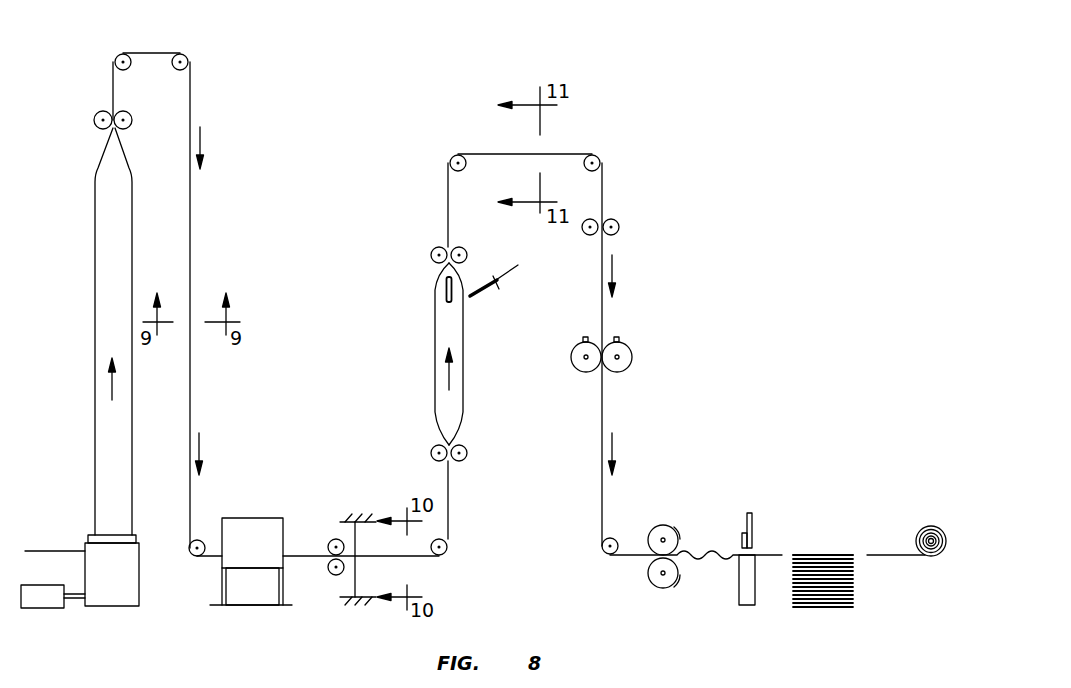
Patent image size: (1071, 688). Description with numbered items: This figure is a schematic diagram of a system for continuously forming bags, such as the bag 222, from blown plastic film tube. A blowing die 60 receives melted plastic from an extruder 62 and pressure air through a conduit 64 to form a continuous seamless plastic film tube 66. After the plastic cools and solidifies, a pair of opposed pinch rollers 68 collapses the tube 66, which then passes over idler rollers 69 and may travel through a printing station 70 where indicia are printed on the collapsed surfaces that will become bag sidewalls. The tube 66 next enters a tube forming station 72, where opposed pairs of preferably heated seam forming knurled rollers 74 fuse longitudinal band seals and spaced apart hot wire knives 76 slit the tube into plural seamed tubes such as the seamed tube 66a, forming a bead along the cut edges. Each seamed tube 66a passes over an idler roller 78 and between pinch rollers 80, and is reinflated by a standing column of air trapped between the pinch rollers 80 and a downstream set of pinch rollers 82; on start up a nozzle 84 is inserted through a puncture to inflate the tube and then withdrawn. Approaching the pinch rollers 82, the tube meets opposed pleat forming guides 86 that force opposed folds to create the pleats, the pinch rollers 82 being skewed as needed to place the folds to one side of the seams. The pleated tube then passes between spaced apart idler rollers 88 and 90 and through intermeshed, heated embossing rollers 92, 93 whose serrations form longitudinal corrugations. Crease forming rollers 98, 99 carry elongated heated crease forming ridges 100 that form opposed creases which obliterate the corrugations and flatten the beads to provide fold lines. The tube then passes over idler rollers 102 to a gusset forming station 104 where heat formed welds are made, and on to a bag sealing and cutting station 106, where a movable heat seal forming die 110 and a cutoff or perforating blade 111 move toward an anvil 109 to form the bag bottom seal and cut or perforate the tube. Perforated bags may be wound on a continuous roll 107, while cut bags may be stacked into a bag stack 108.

The blowing die 60 is at (139, 582).
The extruder 62 is at (45, 598).
The conduit 64 is at (52, 551).
The plastic film tube 66 is at (95, 361).
The seamed tube 66a is at (435, 335).
The pinch rollers 68 is at (106, 112).
The idler rollers 69 is at (178, 55).
The printing station 70 is at (262, 510).
The tube forming station 72 is at (330, 522).
The seam forming knurled rollers 74 is at (329, 572).
The hot wire knives 76 is at (357, 568).
The idler roller 78 is at (449, 554).
The pinch rollers 80 is at (443, 461).
The pinch rollers 82 is at (455, 249).
The nozzle 84 is at (479, 297).
The pleat forming guides 86 is at (447, 288).
The idler roller 88 is at (452, 153).
The idler roller 90 is at (601, 153).
The embossing roller 92 is at (592, 218).
The embossing roller 93 is at (619, 220).
The crease forming roller 98 is at (582, 372).
The crease forming roller 99 is at (620, 372).
The crease forming ridges 100 is at (590, 336).
The idler rollers 102 is at (601, 555).
The gusset forming station 104 is at (676, 515).
The bag sealing and cutting station 106 is at (763, 494).
The continuous roll 107 is at (932, 526).
The bag stack 108 is at (853, 578).
The anvil 109 is at (739, 580).
The heat seal forming die 110 is at (753, 540).
The cutoff or perforating blade 111 is at (742, 540).
The bag 222 is at (819, 548).